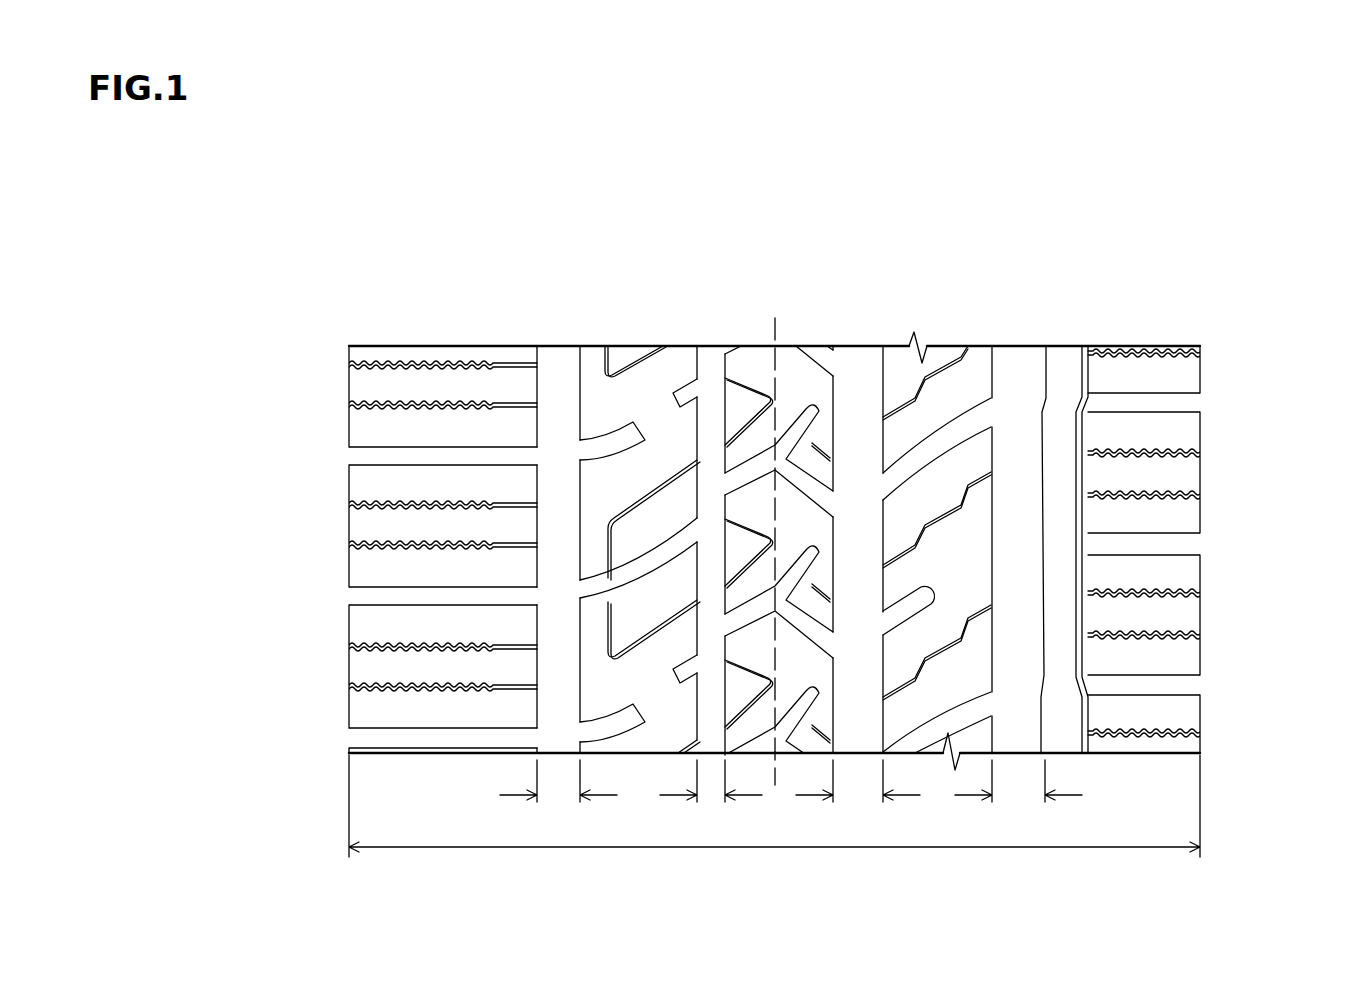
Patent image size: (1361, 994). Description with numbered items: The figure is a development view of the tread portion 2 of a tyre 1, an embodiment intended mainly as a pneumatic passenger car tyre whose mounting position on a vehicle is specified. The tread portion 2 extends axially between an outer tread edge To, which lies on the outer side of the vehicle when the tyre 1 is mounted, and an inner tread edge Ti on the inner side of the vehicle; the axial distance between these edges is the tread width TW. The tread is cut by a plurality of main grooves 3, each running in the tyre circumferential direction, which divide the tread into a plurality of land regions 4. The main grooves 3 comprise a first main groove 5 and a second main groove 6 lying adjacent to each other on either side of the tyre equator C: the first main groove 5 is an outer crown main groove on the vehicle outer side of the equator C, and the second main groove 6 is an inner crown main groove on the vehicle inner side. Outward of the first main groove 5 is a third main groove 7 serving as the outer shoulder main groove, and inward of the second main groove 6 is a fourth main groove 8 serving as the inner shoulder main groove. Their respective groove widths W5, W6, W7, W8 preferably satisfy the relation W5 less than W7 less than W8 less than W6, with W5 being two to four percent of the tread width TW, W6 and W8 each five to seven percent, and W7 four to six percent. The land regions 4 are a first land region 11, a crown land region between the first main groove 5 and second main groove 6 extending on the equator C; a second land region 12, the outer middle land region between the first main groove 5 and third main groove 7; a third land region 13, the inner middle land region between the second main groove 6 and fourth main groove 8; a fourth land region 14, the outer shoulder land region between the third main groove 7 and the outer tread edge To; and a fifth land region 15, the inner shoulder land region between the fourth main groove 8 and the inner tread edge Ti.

The tyre 1 is at (1270, 267).
The tread portion 2 is at (1237, 349).
The main grooves 3 is at (797, 472).
The land regions 4 is at (775, 513).
The first main groove 5 is at (707, 378).
The second main groove 6 is at (856, 380).
The third main groove 7 is at (556, 380).
The fourth main groove 8 is at (1019, 380).
The first land region 11 is at (833, 340).
The second land region 12 is at (697, 340).
The third land region 13 is at (992, 340).
The fourth land region 14 is at (537, 340).
The fifth land region 15 is at (1200, 340).
The tyre equator C is at (774, 536).
The outer tread edge To is at (347, 427).
The inner tread edge Ti is at (1203, 427).
The tread width TW is at (774, 818).
The groove width of the first main groove W5 is at (711, 795).
The groove width of the second main groove W6 is at (858, 795).
The groove width of the third main groove W7 is at (558, 795).
The groove width of the fourth main groove W8 is at (1018, 795).